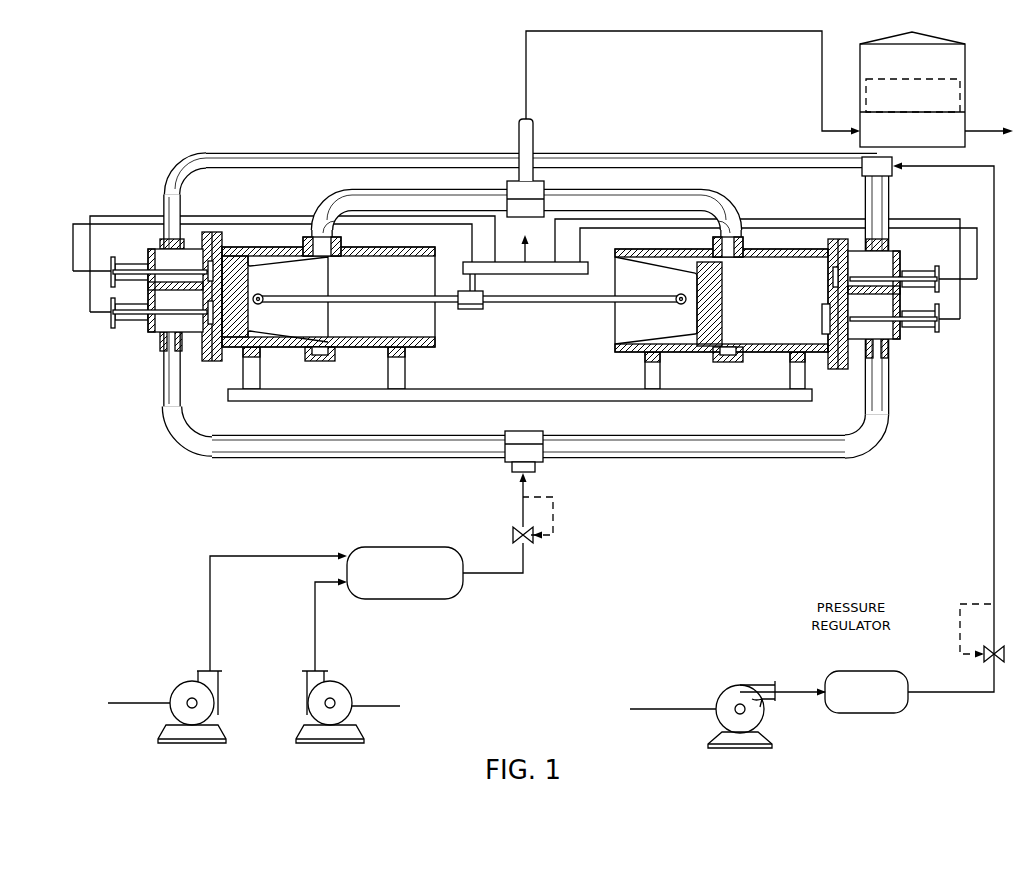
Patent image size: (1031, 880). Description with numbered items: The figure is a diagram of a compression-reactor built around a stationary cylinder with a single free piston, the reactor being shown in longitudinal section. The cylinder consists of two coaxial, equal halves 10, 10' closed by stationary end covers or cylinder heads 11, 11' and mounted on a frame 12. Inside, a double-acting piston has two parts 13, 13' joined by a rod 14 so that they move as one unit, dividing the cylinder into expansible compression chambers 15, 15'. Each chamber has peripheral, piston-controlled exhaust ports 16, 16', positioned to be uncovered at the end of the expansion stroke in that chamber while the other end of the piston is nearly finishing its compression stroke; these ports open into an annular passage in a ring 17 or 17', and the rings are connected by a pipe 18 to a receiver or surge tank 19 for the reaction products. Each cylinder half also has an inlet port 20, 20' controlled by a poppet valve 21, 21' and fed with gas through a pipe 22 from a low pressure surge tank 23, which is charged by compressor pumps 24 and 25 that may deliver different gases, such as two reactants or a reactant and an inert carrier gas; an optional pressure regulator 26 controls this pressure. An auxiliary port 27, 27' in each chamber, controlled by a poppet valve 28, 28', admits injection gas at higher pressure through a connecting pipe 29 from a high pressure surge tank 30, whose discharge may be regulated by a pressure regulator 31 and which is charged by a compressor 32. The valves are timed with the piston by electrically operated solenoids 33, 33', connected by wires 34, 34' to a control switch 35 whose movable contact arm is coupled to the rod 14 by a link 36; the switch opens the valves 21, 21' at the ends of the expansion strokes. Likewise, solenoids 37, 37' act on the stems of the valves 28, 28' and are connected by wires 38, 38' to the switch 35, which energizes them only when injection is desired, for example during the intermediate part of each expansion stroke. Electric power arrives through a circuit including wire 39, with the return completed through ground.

The cylinder half 10 is at (344, 300).
The cylinder half 10' is at (698, 305).
The end cover 11 is at (199, 292).
The end cover 11' is at (843, 313).
The frame 12 is at (510, 392).
The piston part 13 is at (288, 299).
The piston part 13' is at (656, 300).
The rod 14 is at (566, 303).
The compression chamber 15 is at (239, 281).
The compression chamber 15' is at (743, 287).
The exhaust ports 16 is at (334, 257).
The exhaust ports 16' is at (739, 258).
The ring 17 is at (332, 360).
The ring 17' is at (741, 362).
The pipe 18 is at (432, 196).
The surge tank 19 is at (967, 123).
The inlet port 20 is at (160, 301).
The inlet port 20' is at (893, 310).
The poppet valve 21 is at (241, 313).
The poppet valve 21' is at (810, 319).
The pipe 22 is at (568, 436).
The low pressure surge tank 23 is at (445, 600).
The compressor pump 24 is at (174, 694).
The compressor pump 25 is at (356, 696).
The pressure regulator 26 is at (530, 545).
The auxiliary port 27 is at (160, 290).
The auxiliary port 27' is at (892, 295).
The poppet valve 28 is at (244, 272).
The poppet valve 28' is at (816, 278).
The connecting pipe 29 is at (992, 470).
The high pressure surge tank 30 is at (891, 714).
The pressure regulator 31 is at (984, 665).
The compressor 32 is at (768, 717).
The solenoid 33 is at (286, 276).
The solenoid 33' is at (757, 285).
The wire 34 is at (295, 213).
The wire 34' is at (756, 215).
The control switch 35 is at (576, 275).
The link 36 is at (462, 296).
The solenoid 37 is at (272, 255).
The solenoid 37' is at (778, 260).
The wire 38 is at (350, 302).
The wire 38' is at (716, 302).
The wire 39 is at (528, 248).